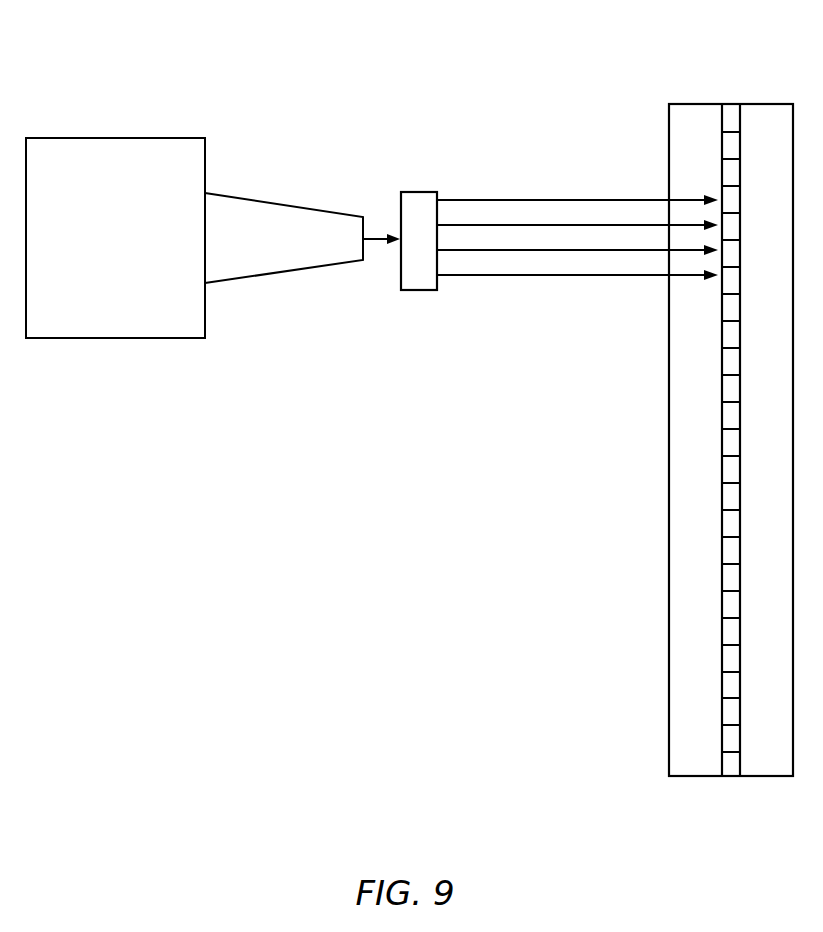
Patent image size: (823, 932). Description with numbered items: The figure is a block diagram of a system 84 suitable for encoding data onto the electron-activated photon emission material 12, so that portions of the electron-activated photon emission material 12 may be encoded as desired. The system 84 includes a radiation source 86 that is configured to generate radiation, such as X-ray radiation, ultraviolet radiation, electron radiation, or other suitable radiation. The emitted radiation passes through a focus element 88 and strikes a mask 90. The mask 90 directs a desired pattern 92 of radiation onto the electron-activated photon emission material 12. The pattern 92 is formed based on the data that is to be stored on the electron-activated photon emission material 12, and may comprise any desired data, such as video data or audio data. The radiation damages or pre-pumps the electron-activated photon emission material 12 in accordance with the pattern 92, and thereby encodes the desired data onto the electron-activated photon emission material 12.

The system 84 is at (197, 53).
The radiation source 86 is at (46, 138).
The focus element 88 is at (263, 277).
The mask 90 is at (418, 290).
The pattern 92 is at (668, 187).
The electron-activated photon emission material 12 is at (683, 73).